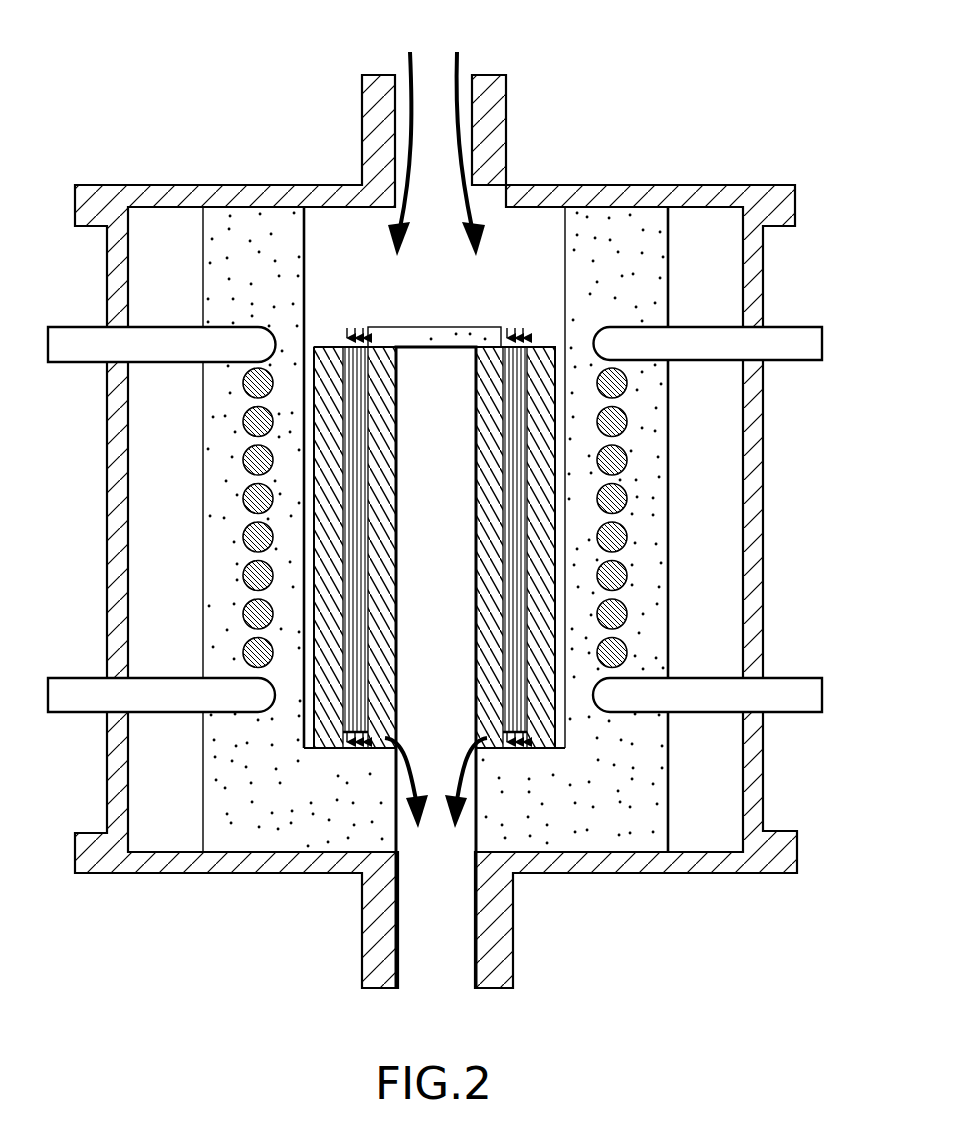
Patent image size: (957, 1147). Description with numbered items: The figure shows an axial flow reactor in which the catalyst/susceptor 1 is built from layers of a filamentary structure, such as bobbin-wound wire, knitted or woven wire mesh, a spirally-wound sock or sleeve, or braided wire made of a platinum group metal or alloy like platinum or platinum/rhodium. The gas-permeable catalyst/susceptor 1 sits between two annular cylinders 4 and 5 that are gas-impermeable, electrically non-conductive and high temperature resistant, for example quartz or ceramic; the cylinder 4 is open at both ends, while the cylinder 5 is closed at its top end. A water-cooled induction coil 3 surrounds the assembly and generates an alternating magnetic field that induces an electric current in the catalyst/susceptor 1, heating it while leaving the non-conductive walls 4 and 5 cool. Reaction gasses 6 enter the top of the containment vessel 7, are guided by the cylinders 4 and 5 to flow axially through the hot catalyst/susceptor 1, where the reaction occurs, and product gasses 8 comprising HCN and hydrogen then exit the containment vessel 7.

The catalyst/susceptor 1 is at (514, 545).
The induction coil 3 is at (628, 500).
The cylinder 4 is at (538, 463).
The cylinder 5 is at (492, 528).
The reaction gasses 6 is at (457, 55).
The containment vessel 7 is at (627, 185).
The product gasses 8 is at (453, 830).